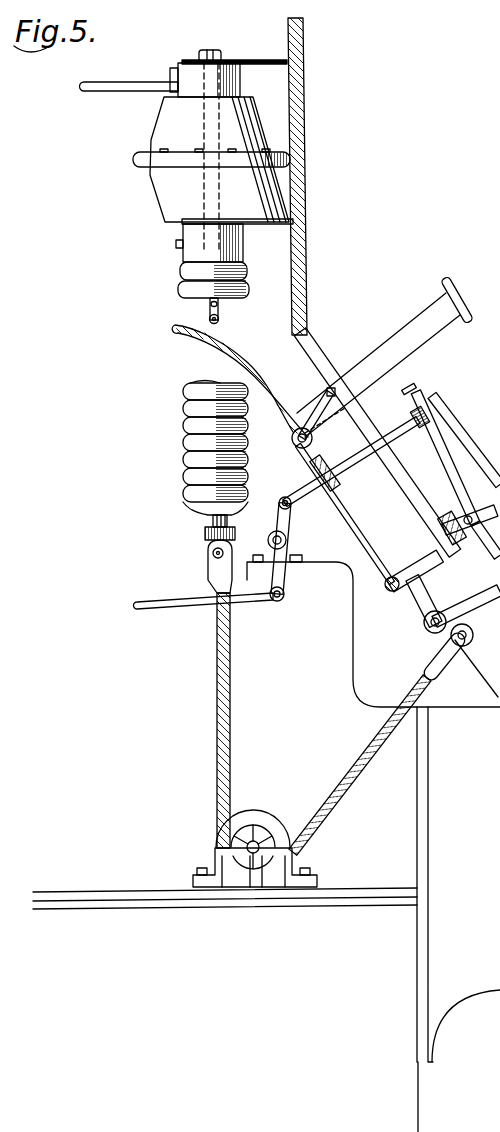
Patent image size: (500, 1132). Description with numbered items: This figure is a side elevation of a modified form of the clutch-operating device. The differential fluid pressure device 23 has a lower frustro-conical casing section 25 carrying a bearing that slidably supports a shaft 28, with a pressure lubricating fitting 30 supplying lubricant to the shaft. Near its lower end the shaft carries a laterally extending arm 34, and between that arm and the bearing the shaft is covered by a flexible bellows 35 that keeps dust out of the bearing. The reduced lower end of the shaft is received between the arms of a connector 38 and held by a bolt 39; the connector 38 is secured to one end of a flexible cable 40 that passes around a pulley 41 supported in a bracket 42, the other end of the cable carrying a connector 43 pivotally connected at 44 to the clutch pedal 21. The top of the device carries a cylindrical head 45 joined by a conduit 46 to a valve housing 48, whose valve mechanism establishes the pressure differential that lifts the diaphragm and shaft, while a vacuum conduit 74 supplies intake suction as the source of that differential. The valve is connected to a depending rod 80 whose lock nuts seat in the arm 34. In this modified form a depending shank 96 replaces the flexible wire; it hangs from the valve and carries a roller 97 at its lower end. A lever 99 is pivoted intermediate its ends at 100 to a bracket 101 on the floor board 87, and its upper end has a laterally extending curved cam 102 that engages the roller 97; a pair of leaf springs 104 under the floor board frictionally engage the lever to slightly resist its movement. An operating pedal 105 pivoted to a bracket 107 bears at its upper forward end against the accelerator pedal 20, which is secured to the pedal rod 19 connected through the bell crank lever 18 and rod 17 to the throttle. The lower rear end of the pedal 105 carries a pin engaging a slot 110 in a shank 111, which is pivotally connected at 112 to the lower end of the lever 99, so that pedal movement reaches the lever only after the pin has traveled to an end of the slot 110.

The valve housing 48 is at (213, 50).
The cylindrical head 45 is at (240, 68).
The conduit 46 is at (240, 82).
The vacuum conduit 74 is at (105, 93).
The differential fluid pressure device 23 is at (148, 138).
The lower frustro-conical casing section 25 is at (167, 195).
The pressure lubricating fitting 30 is at (176, 243).
The flexible bellows 35 is at (182, 275).
The depending rod 80 is at (220, 303).
The depending shank 96 is at (208, 308).
The roller 97 is at (222, 317).
The curved cam 102 is at (188, 335).
The lever pivot 100 is at (305, 420).
The bracket 101 is at (330, 425).
The clutch pedal 21 is at (372, 340).
The pedal rod 19 is at (390, 427).
The accelerator pedal 20 is at (413, 393).
The floor board 87 is at (423, 487).
The operating pedal 105 is at (477, 470).
The bracket 107 is at (458, 512).
The lever 99 is at (373, 532).
The leaf springs 104 is at (422, 563).
The shank pivot 112 is at (420, 627).
The shank 111 is at (465, 600).
The slot 110 is at (478, 548).
The bell crank lever 18 is at (290, 523).
The pivotal connection 44 is at (468, 647).
The connector 43 is at (455, 667).
The shaft 28 is at (207, 519).
The laterally extending arm 34 is at (207, 528).
The connector 38 is at (217, 573).
The bolt 39 is at (210, 552).
The rod 17 is at (163, 605).
The flexible cable 40 is at (217, 748).
The pulley 41 is at (282, 812).
The bracket 42 is at (215, 855).